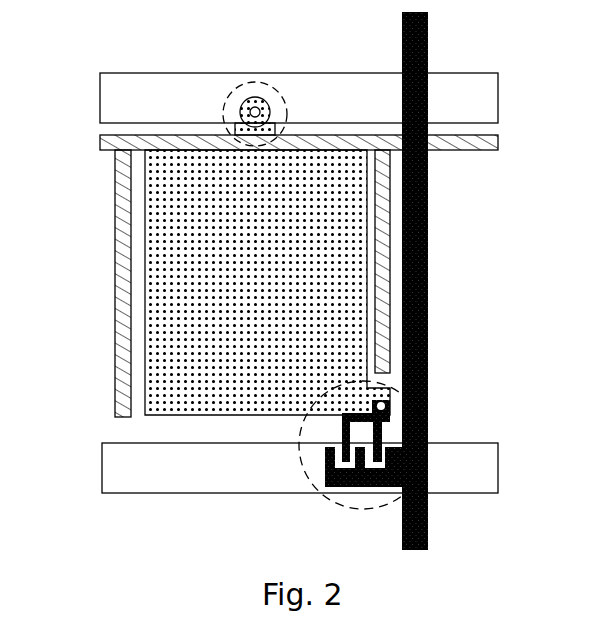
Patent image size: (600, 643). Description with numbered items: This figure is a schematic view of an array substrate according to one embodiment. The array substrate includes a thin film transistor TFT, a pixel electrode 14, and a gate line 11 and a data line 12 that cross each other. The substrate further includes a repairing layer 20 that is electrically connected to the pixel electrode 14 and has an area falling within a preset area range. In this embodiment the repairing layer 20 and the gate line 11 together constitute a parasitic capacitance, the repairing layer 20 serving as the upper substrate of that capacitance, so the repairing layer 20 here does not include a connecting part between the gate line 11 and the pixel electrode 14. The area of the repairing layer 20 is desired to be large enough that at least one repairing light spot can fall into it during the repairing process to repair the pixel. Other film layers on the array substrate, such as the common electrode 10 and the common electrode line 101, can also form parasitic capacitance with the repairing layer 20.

The gate line 11 is at (468, 100).
The common electrode line 101 is at (120, 145).
The pixel electrode 14 is at (180, 263).
The common electrode 10 is at (127, 363).
The data line 12 is at (428, 288).
The repairing layer 20 is at (262, 88).
The thin film transistor TFT is at (363, 502).